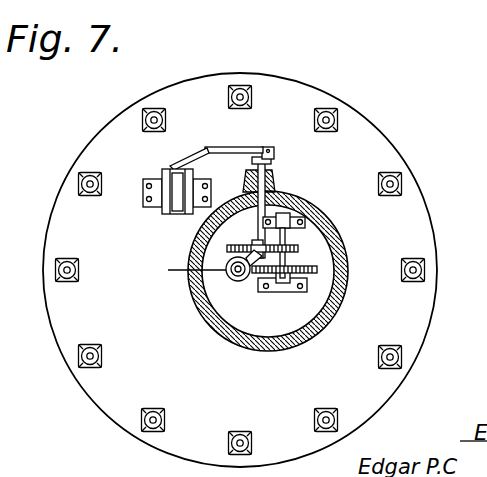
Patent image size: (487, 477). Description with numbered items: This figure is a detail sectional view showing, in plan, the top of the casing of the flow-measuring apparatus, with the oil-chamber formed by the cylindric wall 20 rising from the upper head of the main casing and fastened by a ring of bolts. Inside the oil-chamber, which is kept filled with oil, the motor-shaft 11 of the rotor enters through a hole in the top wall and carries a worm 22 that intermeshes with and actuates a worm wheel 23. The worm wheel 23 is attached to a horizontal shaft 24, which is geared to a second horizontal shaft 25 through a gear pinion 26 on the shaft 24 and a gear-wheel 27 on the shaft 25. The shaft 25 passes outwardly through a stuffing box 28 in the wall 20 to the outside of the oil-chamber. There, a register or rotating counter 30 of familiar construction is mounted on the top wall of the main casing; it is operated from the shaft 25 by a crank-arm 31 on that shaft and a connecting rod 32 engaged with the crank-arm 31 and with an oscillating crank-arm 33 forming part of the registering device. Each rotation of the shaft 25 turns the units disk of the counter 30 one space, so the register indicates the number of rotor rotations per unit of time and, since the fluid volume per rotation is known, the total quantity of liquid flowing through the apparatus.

The motor-shaft 11 is at (168, 278).
The cylindric wall 20 is at (346, 289).
The worm 22 is at (239, 281).
The worm wheel 23 is at (318, 270).
The horizontal shaft 24 is at (292, 225).
The second horizontal shaft 25 is at (258, 214).
The gear pinion 26 is at (285, 253).
The gear-wheel 27 is at (227, 250).
The stuffing box 28 is at (276, 190).
The register or rotating counter 30 is at (165, 172).
The crank-arm 31 is at (275, 160).
The connecting rod 32 is at (244, 148).
The oscillating crank-arm 33 is at (188, 156).